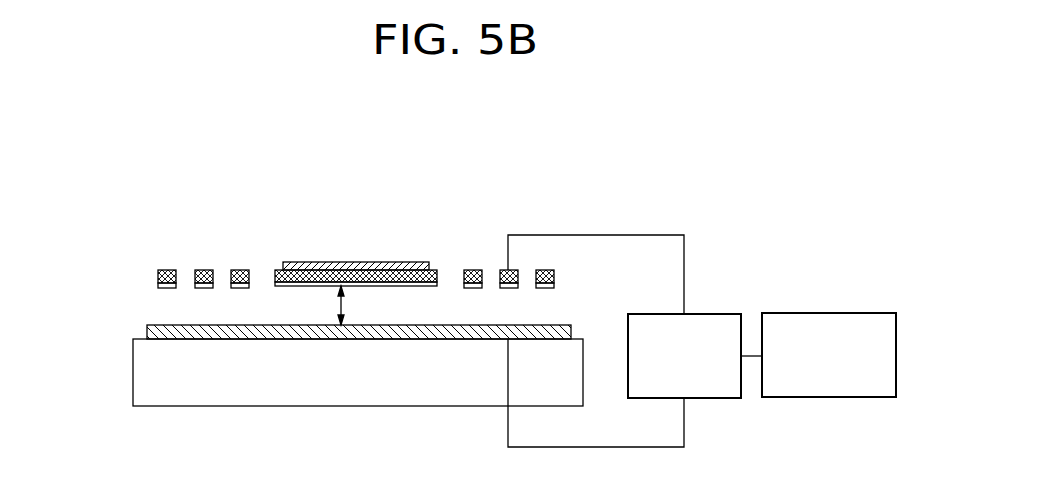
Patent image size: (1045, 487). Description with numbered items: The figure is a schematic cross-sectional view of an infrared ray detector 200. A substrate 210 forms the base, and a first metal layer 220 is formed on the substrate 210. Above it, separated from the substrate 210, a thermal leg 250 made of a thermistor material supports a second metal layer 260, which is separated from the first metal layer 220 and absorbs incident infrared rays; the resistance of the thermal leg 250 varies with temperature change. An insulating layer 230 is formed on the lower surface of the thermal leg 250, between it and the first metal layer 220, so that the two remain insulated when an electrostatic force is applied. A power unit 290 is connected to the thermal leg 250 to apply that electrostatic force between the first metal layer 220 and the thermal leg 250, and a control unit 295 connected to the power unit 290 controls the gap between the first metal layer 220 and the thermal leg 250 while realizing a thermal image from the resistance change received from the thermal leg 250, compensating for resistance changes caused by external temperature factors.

The infrared ray detector 200 is at (137, 222).
The substrate 210 is at (140, 375).
The first metal layer 220 is at (147, 330).
The insulating layer 230 is at (158, 283).
The thermal leg 250 is at (158, 275).
The second metal layer 260 is at (355, 262).
The power unit 290 is at (715, 314).
The control unit 295 is at (829, 313).